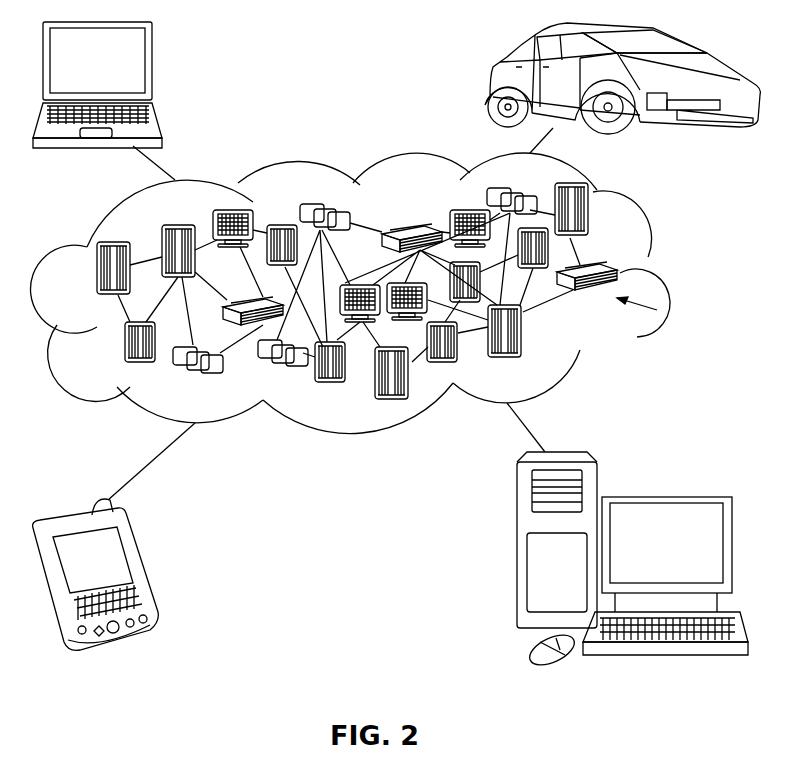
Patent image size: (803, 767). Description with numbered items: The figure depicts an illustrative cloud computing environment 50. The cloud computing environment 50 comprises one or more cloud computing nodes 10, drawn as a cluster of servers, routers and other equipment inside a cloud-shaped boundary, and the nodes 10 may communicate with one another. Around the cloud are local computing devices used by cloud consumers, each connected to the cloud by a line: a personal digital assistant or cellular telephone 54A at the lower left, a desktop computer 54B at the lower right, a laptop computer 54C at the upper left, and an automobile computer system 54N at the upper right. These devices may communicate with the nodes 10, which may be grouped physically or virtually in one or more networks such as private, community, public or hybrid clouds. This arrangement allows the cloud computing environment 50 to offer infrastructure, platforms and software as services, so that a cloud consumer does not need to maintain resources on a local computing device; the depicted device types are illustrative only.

The cloud computing node 10 is at (657, 310).
The cloud computing environment 50 is at (667, 275).
The personal digital assistant or cellular telephone 54A is at (142, 565).
The desktop computer 54B is at (673, 478).
The laptop computer 54C is at (152, 66).
The automobile computer system 54N is at (492, 80).